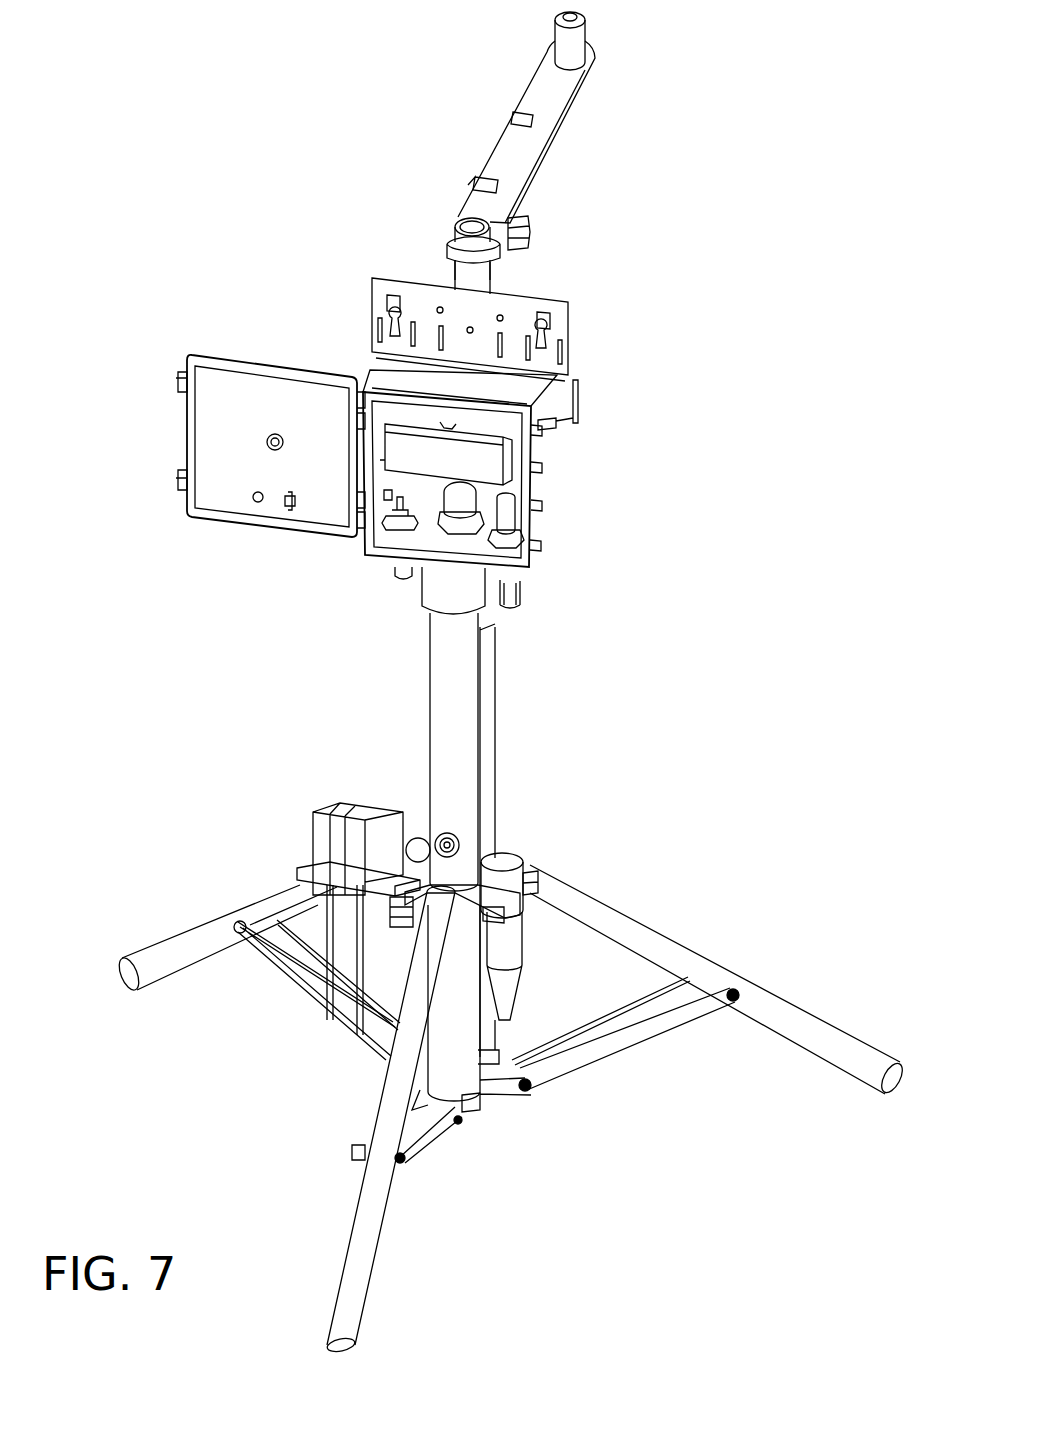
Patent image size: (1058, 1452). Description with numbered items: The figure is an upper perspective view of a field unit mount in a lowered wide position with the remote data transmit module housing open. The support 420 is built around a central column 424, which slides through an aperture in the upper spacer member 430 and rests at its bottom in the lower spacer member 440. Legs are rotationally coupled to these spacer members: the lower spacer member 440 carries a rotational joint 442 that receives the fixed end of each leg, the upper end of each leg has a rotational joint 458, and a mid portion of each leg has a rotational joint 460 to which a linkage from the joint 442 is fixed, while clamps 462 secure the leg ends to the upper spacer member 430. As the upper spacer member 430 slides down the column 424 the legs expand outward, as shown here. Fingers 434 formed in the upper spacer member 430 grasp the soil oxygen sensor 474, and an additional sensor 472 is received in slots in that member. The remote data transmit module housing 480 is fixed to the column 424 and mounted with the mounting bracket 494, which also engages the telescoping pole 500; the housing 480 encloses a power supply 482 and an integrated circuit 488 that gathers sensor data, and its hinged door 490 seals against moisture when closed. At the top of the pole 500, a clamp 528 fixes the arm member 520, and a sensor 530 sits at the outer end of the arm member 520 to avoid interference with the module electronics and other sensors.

The support 420 is at (356, 748).
The central column 424 is at (460, 657).
The upper spacer member 430 is at (390, 887).
The fingers 434 is at (538, 882).
The lower spacer member 440 is at (440, 1107).
The rotational joint 442 is at (527, 1090).
The rotational joint 458 is at (525, 898).
The rotational joint 460 is at (735, 1002).
The clamps 462 is at (398, 923).
The sensor 472 is at (325, 838).
The soil oxygen sensor 474 is at (516, 858).
The housing 480 is at (400, 377).
The power supply 482 is at (395, 515).
The integrated circuit 488 is at (530, 478).
The hinged door 490 is at (222, 432).
The mounting bracket 494 is at (520, 318).
The telescoping pole 500 is at (562, 704).
The arm member 520 is at (552, 108).
The clamp 528 is at (530, 232).
The sensor 530 is at (571, 47).